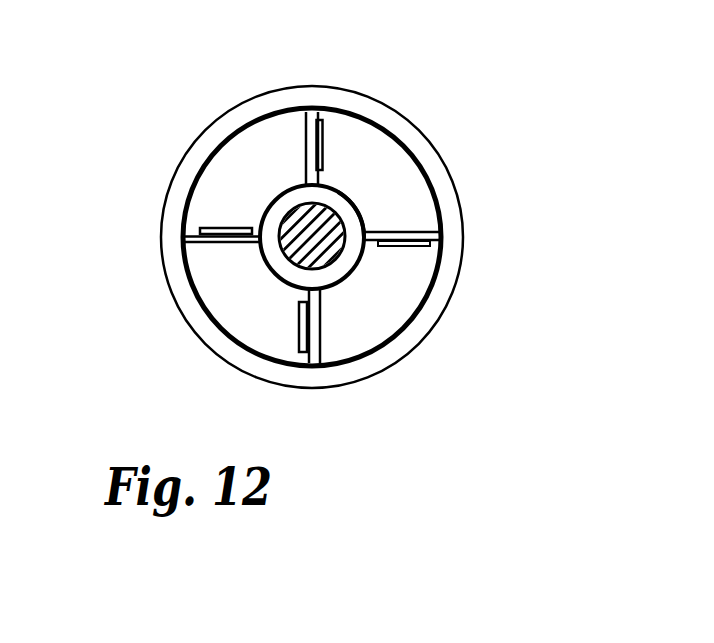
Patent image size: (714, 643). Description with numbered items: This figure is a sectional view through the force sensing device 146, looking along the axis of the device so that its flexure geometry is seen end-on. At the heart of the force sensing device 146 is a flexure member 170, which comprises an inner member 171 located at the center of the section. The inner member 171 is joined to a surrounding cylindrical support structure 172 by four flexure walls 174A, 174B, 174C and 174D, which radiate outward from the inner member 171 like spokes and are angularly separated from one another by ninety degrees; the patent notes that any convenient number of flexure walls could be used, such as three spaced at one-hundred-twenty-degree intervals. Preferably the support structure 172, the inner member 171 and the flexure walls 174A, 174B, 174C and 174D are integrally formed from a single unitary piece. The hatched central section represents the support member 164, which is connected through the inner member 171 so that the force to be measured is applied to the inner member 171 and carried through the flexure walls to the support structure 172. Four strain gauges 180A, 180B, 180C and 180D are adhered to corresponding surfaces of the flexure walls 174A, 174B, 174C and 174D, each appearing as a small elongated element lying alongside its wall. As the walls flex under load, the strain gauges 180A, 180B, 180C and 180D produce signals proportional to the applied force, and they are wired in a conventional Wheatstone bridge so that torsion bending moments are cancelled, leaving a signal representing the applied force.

The force sensing device 146 is at (464, 167).
The support member 164 is at (338, 209).
The flexure member 170 is at (349, 200).
The inner member 171 is at (352, 278).
The cylindrical support structure 172 is at (465, 237).
The flexure wall 174A is at (420, 233).
The flexure wall 174B is at (323, 337).
The flexure wall 174C is at (207, 245).
The flexure wall 174D is at (305, 135).
The strain gauge 180A is at (409, 247).
The strain gauge 180B is at (294, 327).
The strain gauge 180C is at (213, 227).
The strain gauge 180D is at (343, 168).